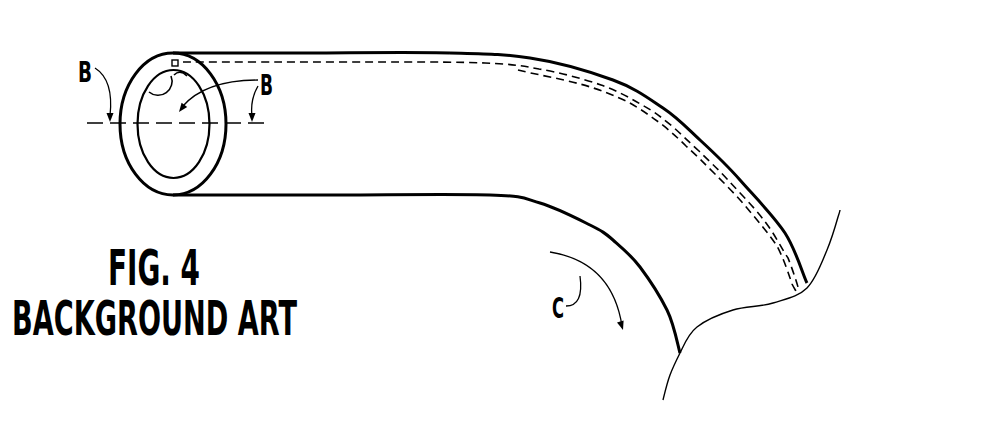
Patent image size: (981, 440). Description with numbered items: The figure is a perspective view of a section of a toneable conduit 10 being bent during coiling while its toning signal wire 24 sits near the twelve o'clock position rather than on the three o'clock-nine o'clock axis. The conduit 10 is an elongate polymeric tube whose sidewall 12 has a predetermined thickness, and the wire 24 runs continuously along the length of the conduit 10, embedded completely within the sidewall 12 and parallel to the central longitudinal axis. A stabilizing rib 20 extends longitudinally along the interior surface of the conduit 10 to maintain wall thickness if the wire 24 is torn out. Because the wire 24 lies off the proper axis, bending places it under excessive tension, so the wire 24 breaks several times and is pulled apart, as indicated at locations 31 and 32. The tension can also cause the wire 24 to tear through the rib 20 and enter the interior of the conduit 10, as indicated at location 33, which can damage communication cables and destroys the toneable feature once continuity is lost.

The toneable conduit 10 is at (336, 197).
The sidewall 12 is at (205, 171).
The stabilizing rib 20 is at (148, 88).
The toning signal wire 24 is at (177, 59).
The location 31 is at (664, 104).
The location 32 is at (789, 224).
The location 33 is at (744, 176).